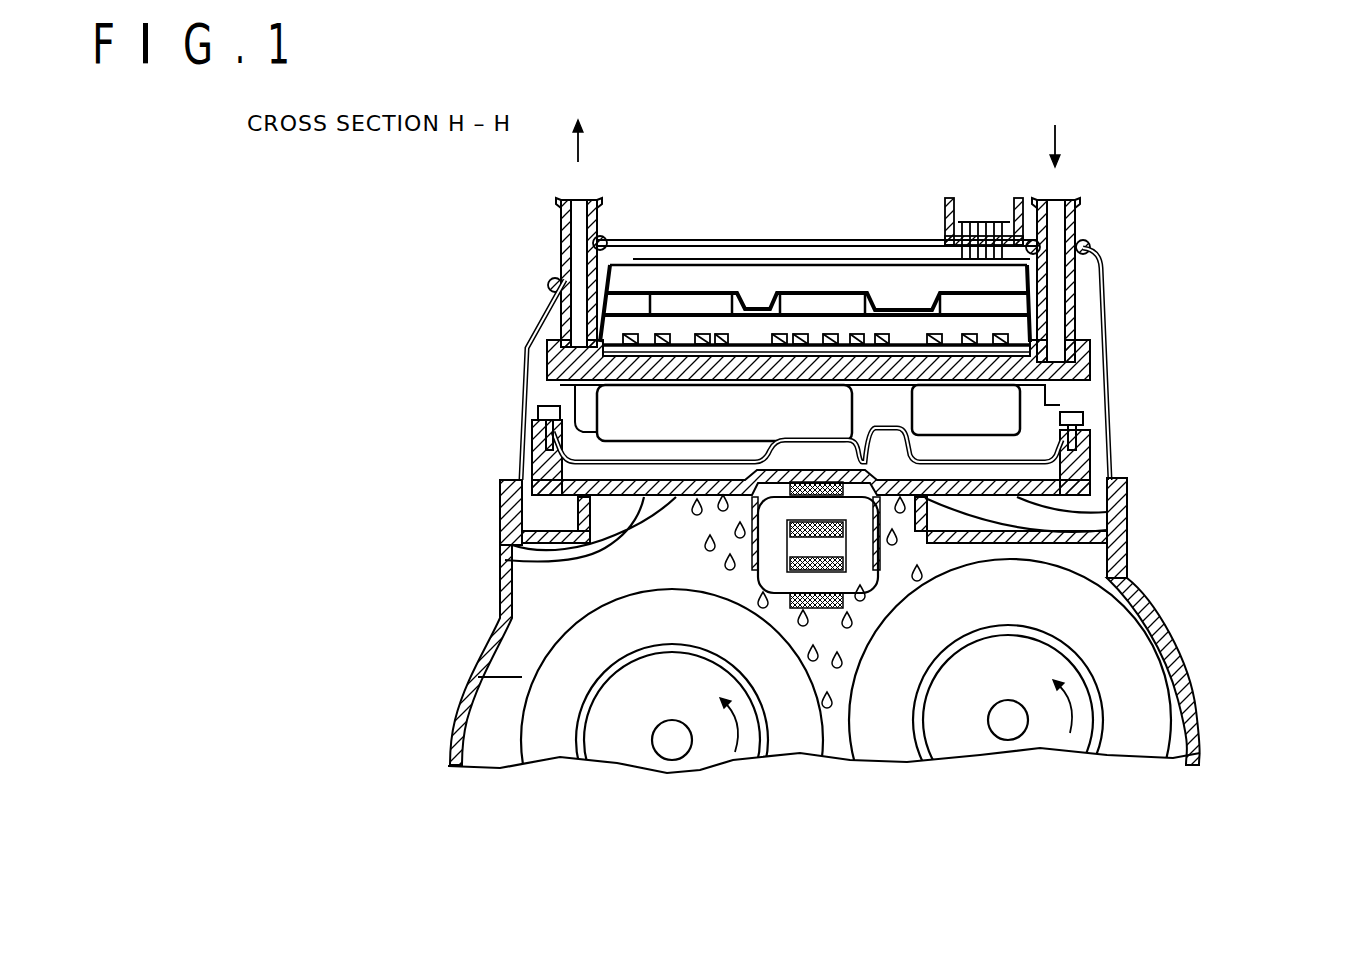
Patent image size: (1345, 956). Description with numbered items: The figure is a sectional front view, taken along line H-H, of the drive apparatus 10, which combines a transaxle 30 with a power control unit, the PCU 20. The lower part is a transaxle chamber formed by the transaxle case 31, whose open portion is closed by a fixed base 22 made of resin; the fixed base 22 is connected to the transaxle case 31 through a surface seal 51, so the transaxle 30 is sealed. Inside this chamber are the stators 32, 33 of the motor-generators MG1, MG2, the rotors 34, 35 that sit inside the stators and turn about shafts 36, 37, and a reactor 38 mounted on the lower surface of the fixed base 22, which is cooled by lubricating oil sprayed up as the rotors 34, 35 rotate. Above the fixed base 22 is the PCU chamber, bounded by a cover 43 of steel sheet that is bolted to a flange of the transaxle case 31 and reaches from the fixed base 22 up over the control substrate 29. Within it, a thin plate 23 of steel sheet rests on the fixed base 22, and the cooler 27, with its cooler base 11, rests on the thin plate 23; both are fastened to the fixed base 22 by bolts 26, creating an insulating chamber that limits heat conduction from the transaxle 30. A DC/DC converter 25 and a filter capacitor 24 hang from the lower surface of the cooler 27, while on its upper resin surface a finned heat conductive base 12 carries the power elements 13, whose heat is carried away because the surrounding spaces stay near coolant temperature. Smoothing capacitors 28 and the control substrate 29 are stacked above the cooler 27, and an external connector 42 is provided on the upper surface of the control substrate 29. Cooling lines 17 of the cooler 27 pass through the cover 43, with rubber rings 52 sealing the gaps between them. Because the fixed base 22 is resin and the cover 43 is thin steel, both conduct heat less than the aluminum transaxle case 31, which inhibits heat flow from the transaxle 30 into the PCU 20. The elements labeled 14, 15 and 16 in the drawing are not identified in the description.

The drive apparatus 10 is at (825, 117).
The cooler base 11 is at (1100, 375).
The heat conductive base 12 is at (925, 355).
The power elements 13 is at (928, 355).
The cover top plate 14 is at (620, 258).
The cover intermediate plate 15 is at (630, 291).
The cover side wall 16 is at (597, 328).
The cooling lines 17 is at (562, 218).
The power control unit (PCU) 20 is at (1120, 329).
The fixed base 22 is at (500, 540).
The thin plate 23 is at (1127, 485).
The filter capacitor 24 is at (1020, 400).
The DC/DC converter 25 is at (505, 560).
The bolts 26 is at (547, 402).
The cooler 27 is at (547, 363).
The smoothing capacitors 28 is at (830, 303).
The control substrate 29 is at (705, 303).
The transaxle 30 is at (1150, 568).
The transaxle case 31 is at (1182, 640).
The stator 32 is at (468, 684).
The stator 33 is at (1135, 735).
The rotor 34 is at (622, 742).
The rotor 35 is at (960, 740).
The shaft 36 is at (672, 752).
The shaft 37 is at (1030, 735).
The reactor 38 is at (757, 604).
The external connector 42 is at (950, 245).
The cover 43 is at (1103, 290).
The surface seal 51 is at (507, 517).
The rubber rings 52 is at (548, 284).
The motor-generator MG1 is at (551, 730).
The motor-generator MG2 is at (877, 730).